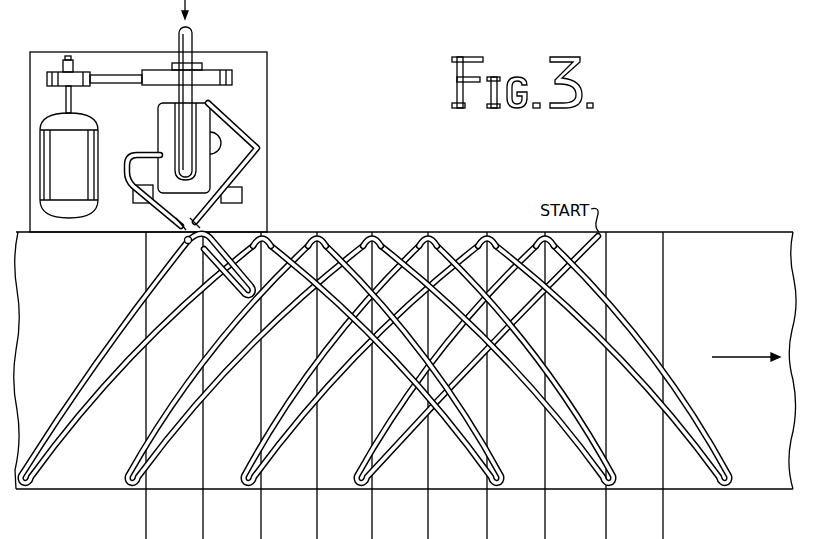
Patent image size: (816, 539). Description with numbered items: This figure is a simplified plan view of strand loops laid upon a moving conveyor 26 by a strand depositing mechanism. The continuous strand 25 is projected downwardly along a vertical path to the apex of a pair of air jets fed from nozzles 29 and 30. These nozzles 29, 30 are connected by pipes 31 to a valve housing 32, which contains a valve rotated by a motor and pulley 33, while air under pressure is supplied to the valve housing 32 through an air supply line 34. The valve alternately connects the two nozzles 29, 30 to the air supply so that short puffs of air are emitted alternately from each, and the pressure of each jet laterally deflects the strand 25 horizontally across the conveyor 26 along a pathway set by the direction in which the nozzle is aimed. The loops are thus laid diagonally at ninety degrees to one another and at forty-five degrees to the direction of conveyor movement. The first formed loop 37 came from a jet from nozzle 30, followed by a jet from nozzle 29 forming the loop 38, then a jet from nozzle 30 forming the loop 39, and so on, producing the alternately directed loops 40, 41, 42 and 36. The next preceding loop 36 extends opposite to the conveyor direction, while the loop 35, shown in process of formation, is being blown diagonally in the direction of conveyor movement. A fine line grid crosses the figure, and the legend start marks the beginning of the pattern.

The strand 25 is at (185, 244).
The conveyor 26 is at (654, 227).
The nozzle 29 is at (160, 212).
The nozzle 30 is at (220, 213).
The pipes 31 is at (259, 145).
The valve housing 32 is at (216, 105).
The motor and pulley 33 is at (111, 47).
The air supply line 34 is at (194, 43).
The loop 35 is at (268, 234).
The loop 36 is at (35, 490).
The loop 37 is at (350, 486).
The loop 38 is at (737, 490).
The loop 39 is at (254, 490).
The loop 40 is at (608, 490).
The loop 41 is at (139, 490).
The loop 42 is at (503, 490).